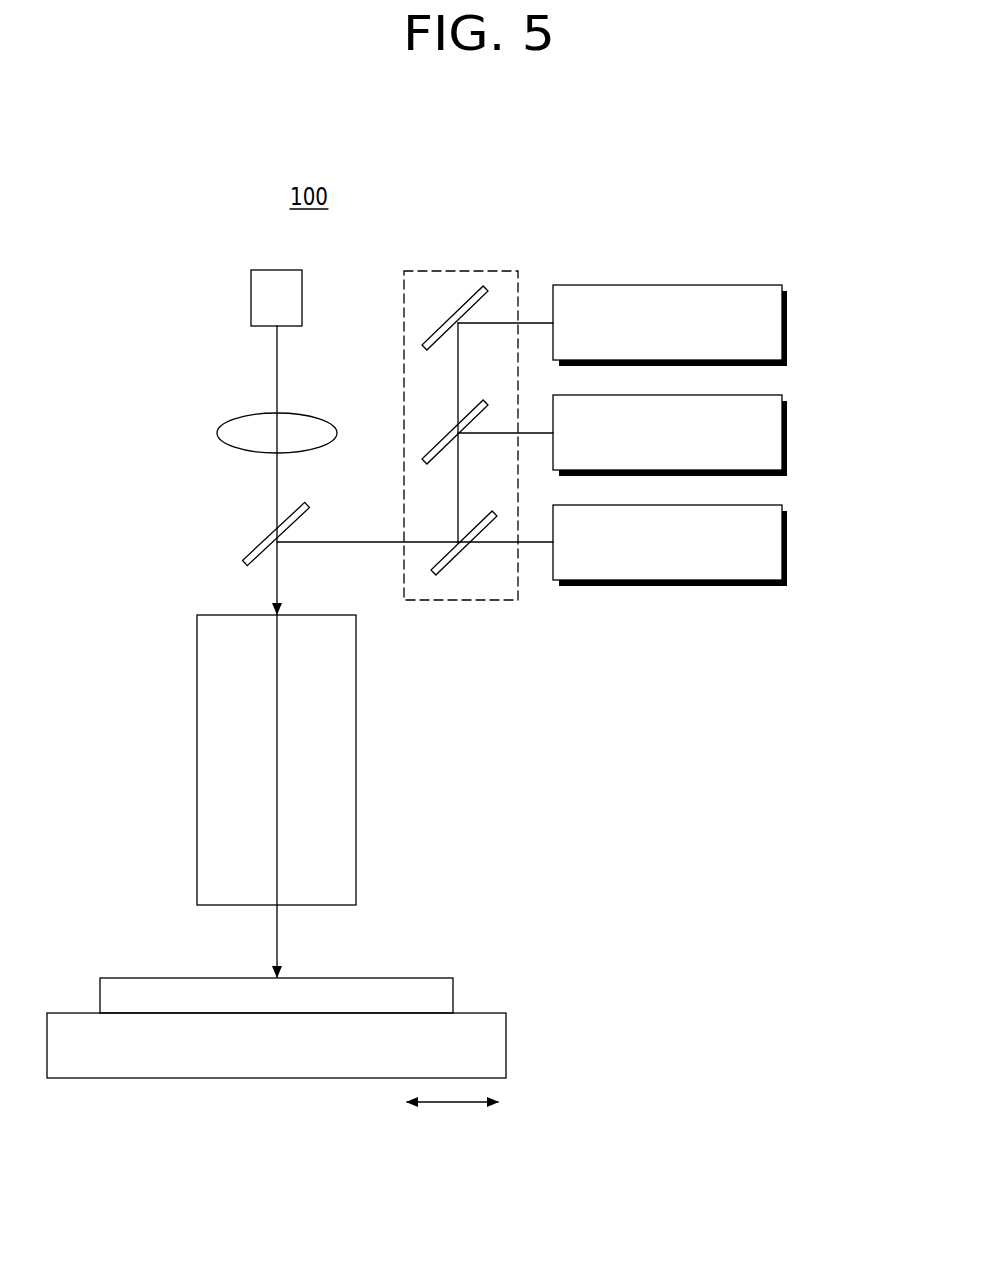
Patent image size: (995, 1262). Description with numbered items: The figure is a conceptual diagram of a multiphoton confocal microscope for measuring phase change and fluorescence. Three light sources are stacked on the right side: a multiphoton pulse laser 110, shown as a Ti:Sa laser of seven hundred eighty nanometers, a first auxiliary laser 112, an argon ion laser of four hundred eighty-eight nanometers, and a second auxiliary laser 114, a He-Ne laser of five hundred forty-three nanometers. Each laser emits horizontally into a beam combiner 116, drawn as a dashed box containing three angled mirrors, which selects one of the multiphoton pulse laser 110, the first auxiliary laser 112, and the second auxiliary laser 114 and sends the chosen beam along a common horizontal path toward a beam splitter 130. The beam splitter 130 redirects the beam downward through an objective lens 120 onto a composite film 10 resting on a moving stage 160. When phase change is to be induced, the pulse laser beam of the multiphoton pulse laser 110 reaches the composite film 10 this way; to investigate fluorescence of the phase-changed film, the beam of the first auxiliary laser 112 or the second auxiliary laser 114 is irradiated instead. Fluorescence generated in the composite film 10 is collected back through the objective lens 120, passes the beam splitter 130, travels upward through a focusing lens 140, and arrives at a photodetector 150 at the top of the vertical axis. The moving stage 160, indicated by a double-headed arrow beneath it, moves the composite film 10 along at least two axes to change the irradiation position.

The composite film 10 is at (405, 978).
The multiphoton pulse laser 110 is at (787, 546).
The first auxiliary laser 112 is at (787, 432).
The second auxiliary laser 114 is at (787, 320).
The beam combiner 116 is at (470, 270).
The objective lens 120 is at (357, 760).
The beam splitter 130 is at (250, 548).
The focusing lens 140 is at (217, 433).
The photodetector 150 is at (251, 296).
The moving stage 160 is at (507, 1043).